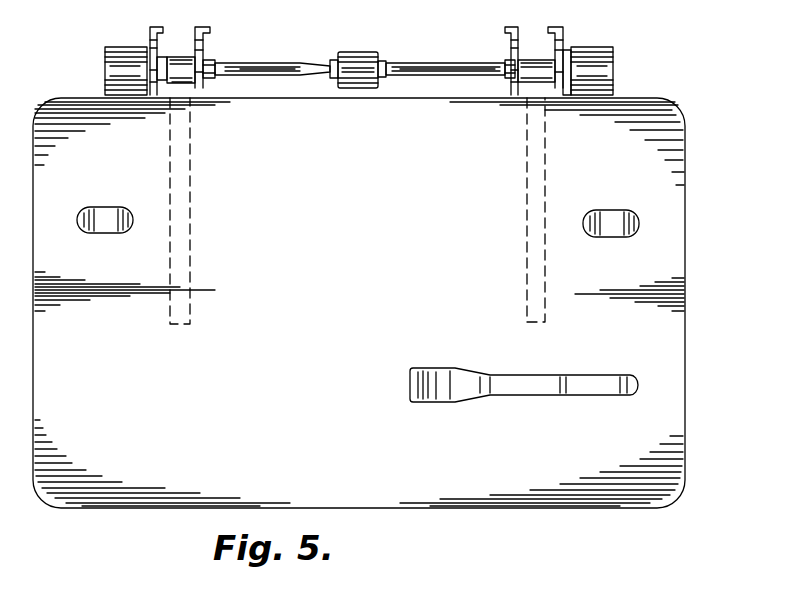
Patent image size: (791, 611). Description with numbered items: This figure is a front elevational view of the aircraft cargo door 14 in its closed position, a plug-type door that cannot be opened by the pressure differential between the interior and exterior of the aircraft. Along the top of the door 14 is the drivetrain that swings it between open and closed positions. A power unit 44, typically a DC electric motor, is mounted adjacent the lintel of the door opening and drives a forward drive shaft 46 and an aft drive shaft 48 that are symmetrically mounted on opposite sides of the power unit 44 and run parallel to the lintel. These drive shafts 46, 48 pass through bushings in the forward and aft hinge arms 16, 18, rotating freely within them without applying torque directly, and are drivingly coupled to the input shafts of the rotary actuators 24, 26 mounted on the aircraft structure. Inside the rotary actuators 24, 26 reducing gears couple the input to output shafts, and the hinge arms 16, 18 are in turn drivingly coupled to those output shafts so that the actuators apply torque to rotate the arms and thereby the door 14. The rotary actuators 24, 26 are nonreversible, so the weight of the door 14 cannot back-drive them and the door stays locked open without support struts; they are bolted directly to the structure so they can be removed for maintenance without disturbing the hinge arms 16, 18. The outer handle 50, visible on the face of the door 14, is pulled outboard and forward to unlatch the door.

The door 14 is at (620, 490).
The forward hinge arm 16 is at (532, 210).
The aft hinge arm 18 is at (182, 200).
The rotary actuator 24 is at (610, 68).
The rotary actuator 26 is at (104, 70).
The power unit 44 is at (366, 90).
The forward drive shaft 46 is at (455, 80).
The aft drive shaft 48 is at (270, 62).
The outer handle 50 is at (560, 388).